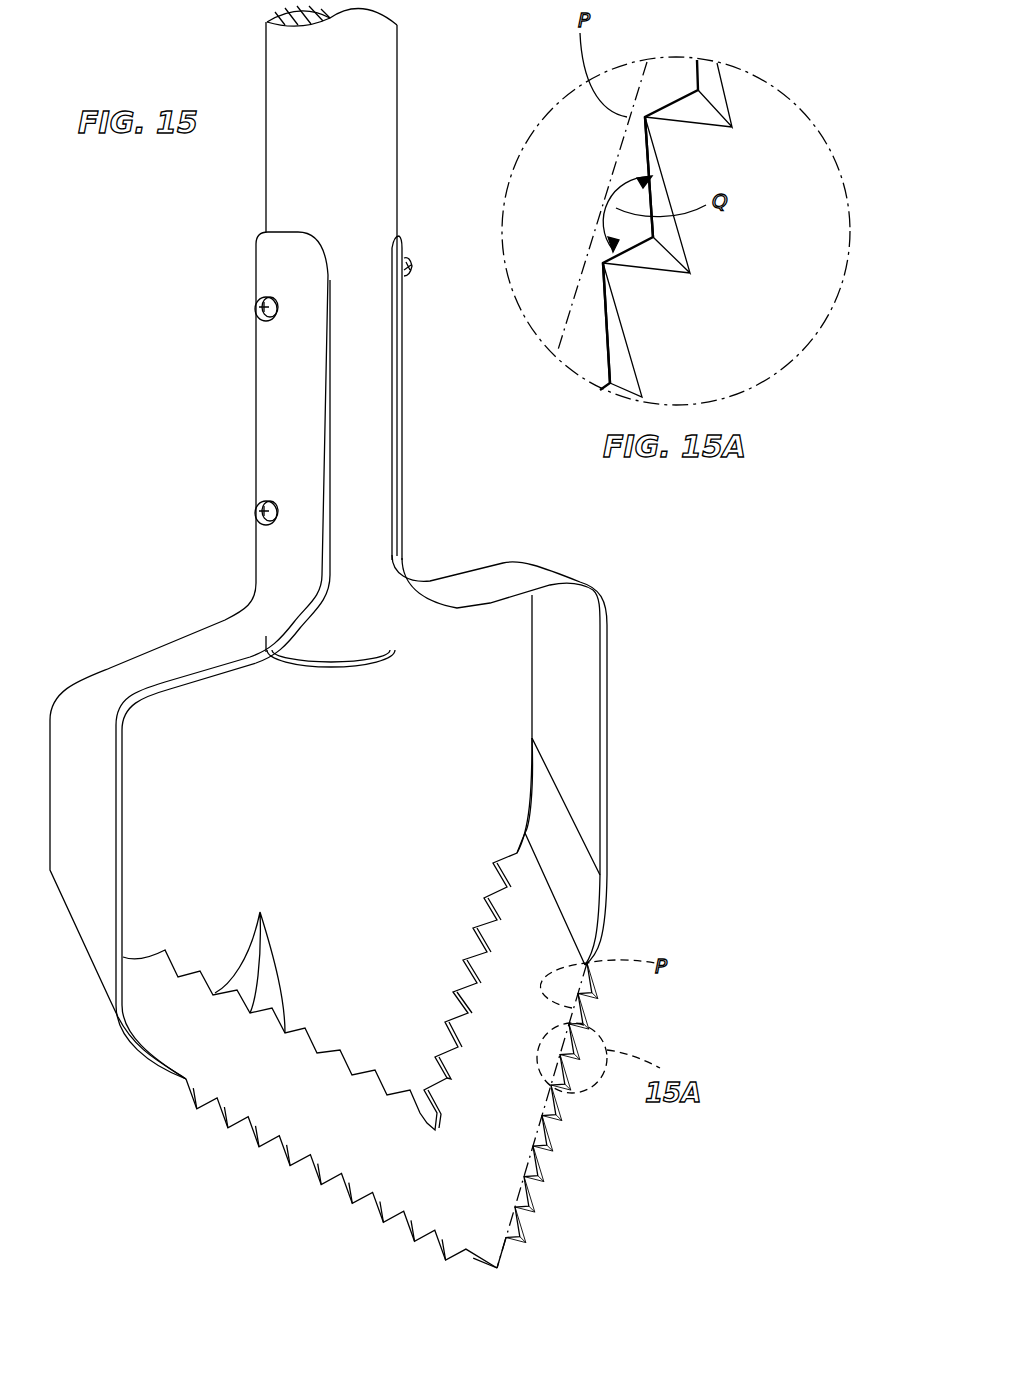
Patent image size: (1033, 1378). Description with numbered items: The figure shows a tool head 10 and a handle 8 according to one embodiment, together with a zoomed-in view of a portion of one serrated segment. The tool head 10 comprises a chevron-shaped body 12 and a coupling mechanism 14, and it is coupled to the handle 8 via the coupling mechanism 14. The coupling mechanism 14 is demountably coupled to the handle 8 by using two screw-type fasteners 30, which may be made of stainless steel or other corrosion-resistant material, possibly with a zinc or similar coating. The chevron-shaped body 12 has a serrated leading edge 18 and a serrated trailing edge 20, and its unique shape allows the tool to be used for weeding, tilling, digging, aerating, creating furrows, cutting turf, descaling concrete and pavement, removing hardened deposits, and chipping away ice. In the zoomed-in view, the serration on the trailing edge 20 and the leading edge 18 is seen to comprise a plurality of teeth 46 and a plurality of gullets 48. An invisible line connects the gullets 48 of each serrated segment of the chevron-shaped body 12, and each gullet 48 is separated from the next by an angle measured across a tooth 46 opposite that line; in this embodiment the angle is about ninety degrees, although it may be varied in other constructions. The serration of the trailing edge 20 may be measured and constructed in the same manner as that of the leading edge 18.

In FIG. 15, the handle 8 is at (370, 110).
In FIG. 15, the tool head 10 is at (116, 631).
In FIG. 15, the chevron-shaped body 12 is at (597, 585).
In FIG. 15, the coupling mechanism 14 is at (285, 390).
In FIG. 15, the leading edge 18 is at (320, 1198).
In FIG. 15, the trailing edge 20 is at (455, 990).
In FIG. 15, the screw-type fasteners 30 is at (255, 312).
In FIG. 15, the teeth 46 is at (538, 1177).
In FIG. 15A, the teeth 46 is at (732, 127).
In FIG. 15, the gullets 48 is at (260, 910).
In FIG. 15A, the gullets 48 is at (645, 117).